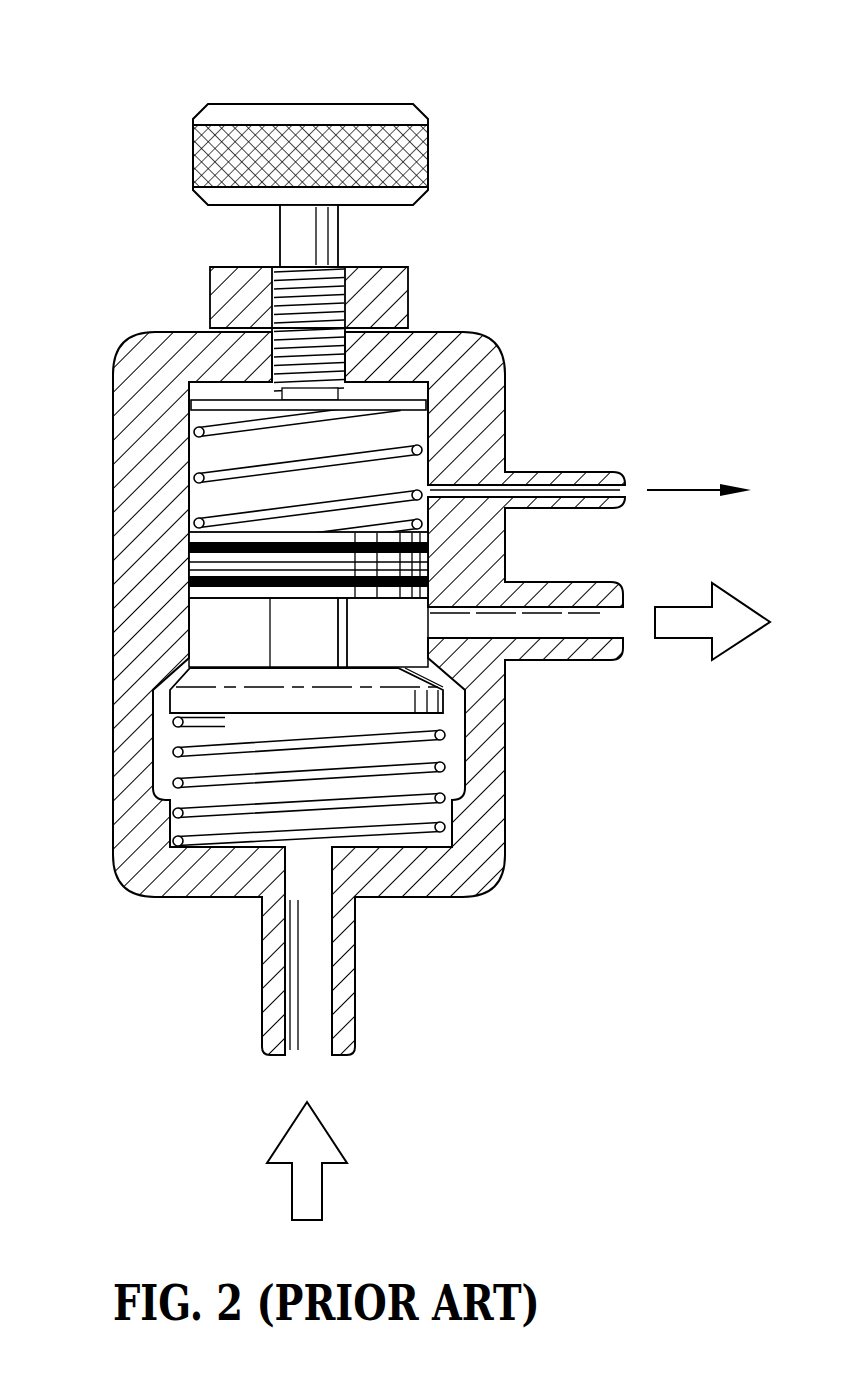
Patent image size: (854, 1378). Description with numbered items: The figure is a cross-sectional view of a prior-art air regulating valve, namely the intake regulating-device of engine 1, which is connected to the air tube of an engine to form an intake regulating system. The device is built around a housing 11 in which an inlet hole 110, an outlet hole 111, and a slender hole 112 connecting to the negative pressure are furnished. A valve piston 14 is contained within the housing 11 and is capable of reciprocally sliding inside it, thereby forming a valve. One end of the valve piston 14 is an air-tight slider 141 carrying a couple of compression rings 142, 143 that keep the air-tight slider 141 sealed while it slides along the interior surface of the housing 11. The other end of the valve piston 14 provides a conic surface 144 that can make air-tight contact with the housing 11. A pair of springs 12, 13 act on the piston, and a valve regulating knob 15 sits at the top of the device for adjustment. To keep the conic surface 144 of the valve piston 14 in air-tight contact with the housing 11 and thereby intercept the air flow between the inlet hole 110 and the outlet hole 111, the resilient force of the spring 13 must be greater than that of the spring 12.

The intake regulating-device of engine 1 is at (532, 277).
The housing 11 is at (153, 357).
The inlet hole 110 is at (307, 968).
The outlet hole 111 is at (578, 627).
The slender hole 112 is at (584, 472).
The spring 12 is at (198, 477).
The spring 13 is at (393, 827).
The valve piston 14 is at (287, 655).
The air-tight slider 141 is at (190, 563).
The compression ring 142 is at (240, 563).
The compression ring 143 is at (365, 590).
The conic surface 144 is at (185, 676).
The valve regulating knob 15 is at (342, 128).